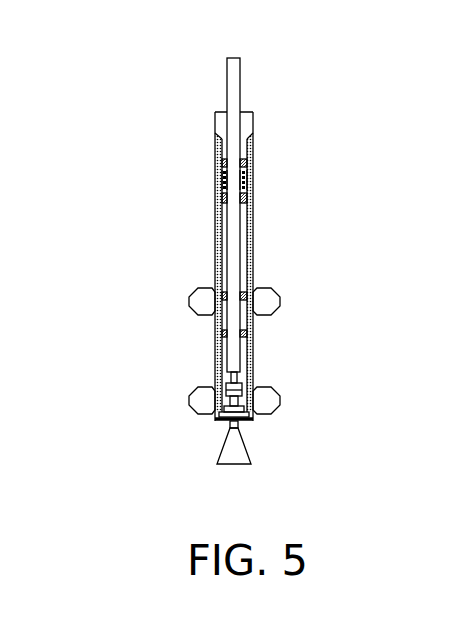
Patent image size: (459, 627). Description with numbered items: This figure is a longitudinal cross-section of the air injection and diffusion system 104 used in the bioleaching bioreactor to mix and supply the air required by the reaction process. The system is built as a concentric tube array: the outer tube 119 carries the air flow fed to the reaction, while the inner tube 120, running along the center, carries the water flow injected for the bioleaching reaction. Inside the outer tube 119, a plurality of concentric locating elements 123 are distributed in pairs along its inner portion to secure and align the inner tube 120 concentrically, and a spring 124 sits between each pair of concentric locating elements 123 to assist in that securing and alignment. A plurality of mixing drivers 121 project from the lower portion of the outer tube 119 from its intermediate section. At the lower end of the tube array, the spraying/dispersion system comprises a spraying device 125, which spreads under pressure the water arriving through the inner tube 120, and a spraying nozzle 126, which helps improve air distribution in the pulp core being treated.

The air injection and diffusion system 104 is at (203, 184).
The outer tube 119 is at (253, 126).
The inner tube 120 is at (235, 264).
The mixing drivers 121 is at (198, 305).
The concentric locating elements 123 is at (246, 198).
The spring 124 is at (247, 183).
The spraying device 125 is at (228, 392).
The spraying nozzle 126 is at (237, 430).